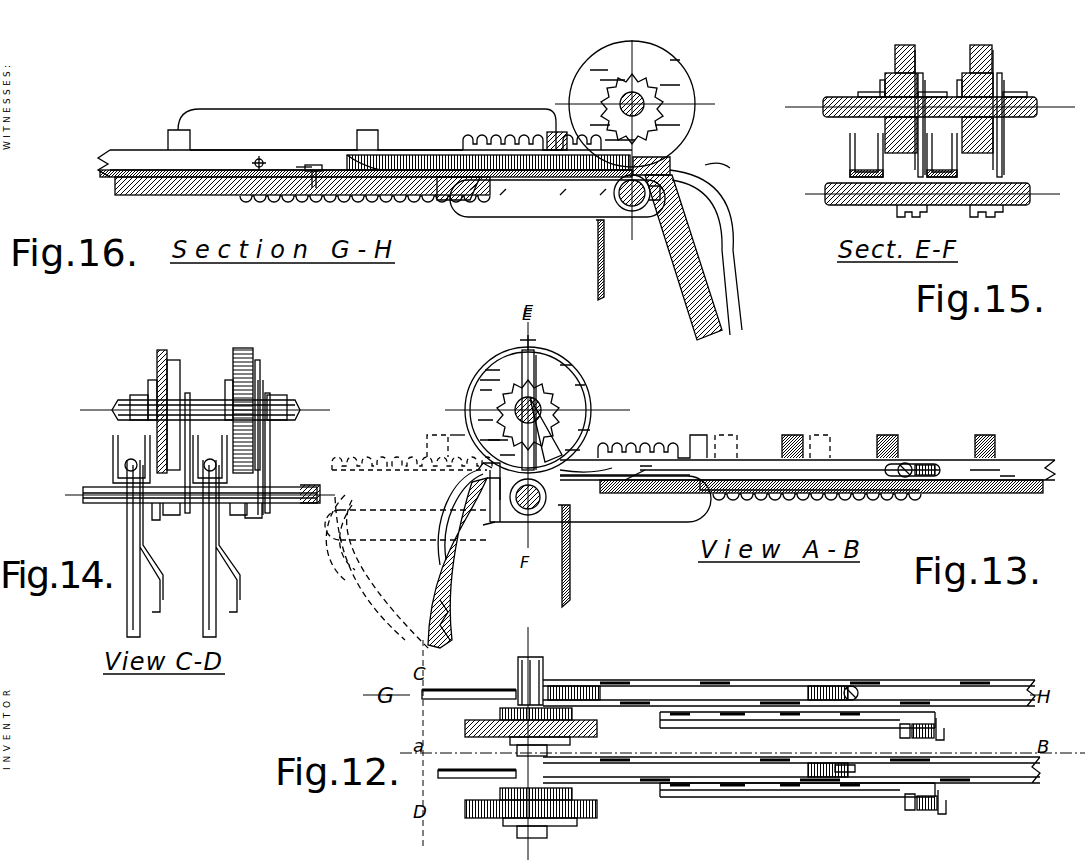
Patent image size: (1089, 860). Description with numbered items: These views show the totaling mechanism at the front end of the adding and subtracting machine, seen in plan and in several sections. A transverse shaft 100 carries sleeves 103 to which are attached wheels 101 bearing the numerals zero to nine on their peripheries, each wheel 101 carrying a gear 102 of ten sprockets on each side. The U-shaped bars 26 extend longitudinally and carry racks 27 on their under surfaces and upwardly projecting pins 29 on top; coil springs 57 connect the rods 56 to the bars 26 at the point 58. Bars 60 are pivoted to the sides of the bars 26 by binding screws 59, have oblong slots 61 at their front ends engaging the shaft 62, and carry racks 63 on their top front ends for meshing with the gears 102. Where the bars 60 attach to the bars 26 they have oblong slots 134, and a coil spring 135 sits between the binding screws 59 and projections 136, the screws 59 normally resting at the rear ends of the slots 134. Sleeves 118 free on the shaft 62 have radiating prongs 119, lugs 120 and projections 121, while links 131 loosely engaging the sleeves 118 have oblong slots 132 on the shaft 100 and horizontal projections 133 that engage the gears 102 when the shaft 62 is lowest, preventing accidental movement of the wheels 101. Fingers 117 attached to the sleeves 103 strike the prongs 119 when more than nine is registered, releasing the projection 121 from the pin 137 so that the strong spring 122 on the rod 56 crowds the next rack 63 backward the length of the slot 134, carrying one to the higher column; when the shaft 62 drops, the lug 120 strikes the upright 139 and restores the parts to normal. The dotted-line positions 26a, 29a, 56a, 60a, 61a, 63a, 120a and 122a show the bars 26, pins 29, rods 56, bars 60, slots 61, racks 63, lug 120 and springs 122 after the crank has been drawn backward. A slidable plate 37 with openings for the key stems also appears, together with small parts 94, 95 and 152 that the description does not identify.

In FIG. 16, the bar 26 is at (112, 156).
In FIG. 15, the bar 26 is at (850, 162).
In FIG. 13, the bar 26 is at (1010, 465).
In FIG. 12, the bar 26 is at (660, 680).
In FIG. 13, the bar in dotted-line position 26a is at (398, 452).
In FIG. 16, the rack 27 is at (172, 196).
In FIG. 13, the rack 27 is at (840, 508).
In FIG. 16, the upwardly projecting pin 29 is at (395, 109).
In FIG. 15, the upwardly projecting pin 29 is at (850, 138).
In FIG. 14, the upwardly projecting pin 29 is at (113, 442).
In FIG. 13, the upwardly projecting pin 29 is at (888, 435).
In FIG. 13, the pin in dotted-line position 29a is at (470, 418).
In FIG. 14, the slidable plate 37 is at (158, 520).
In FIG. 16, the rod 56 is at (692, 261).
In FIG. 14, the rod 56 is at (127, 537).
In FIG. 13, the rod 56 is at (466, 586).
In FIG. 12, the rod 56 is at (465, 692).
In FIG. 13, the rod in dotted-line position 56a is at (400, 612).
In FIG. 16, the coil spring 57 is at (385, 162).
In FIG. 14, the coil spring 57 is at (170, 451).
In FIG. 12, the coil spring 57 is at (550, 686).
In FIG. 16, the spring connection point 58 is at (336, 166).
In FIG. 16, the binding screw 59 is at (258, 157).
In FIG. 13, the binding screw 59 is at (908, 468).
In FIG. 12, the binding screw 59 is at (900, 731).
In FIG. 13, the bar 60 is at (848, 468).
In FIG. 12, the bar 60 is at (760, 722).
In FIG. 13, the bar in dotted-line position 60a is at (650, 473).
In FIG. 16, the oblong slot 61 is at (551, 197).
In FIG. 13, the oblong slot 61 is at (675, 498).
In FIG. 13, the oblong slot in dotted-line position 61a is at (407, 525).
In FIG. 16, the shaft 62 is at (645, 207).
In FIG. 15, the shaft 62 is at (826, 200).
In FIG. 14, the shaft 62 is at (90, 490).
In FIG. 13, the shaft 62 is at (310, 486).
In FIG. 16, the rack 63 is at (472, 134).
In FIG. 13, the rack 63 is at (625, 432).
In FIG. 12, the rack 63 is at (672, 724).
In FIG. 13, the rack in dotted-line position 63a is at (330, 460).
In FIG. 16, the pin 94 is at (318, 188).
In FIG. 12, the pin 94 is at (843, 765).
In FIG. 16, the screw 95 is at (300, 163).
In FIG. 12, the screw 95 is at (850, 688).
In FIG. 15, the shaft 100 is at (822, 96).
In FIG. 14, the shaft 100 is at (114, 404).
In FIG. 13, the shaft 100 is at (485, 360).
In FIG. 12, the shaft 100 is at (530, 648).
In FIG. 16, the wheel 101 is at (665, 65).
In FIG. 15, the wheel 101 is at (895, 52).
In FIG. 14, the wheel 101 is at (160, 350).
In FIG. 13, the wheel 101 is at (545, 350).
In FIG. 12, the wheel 101 is at (465, 724).
In FIG. 16, the gear 102 is at (600, 92).
In FIG. 15, the gear 102 is at (888, 80).
In FIG. 14, the gear 102 is at (152, 380).
In FIG. 13, the gear 102 is at (560, 390).
In FIG. 12, the gear 102 is at (500, 714).
In FIG. 15, the sleeve 103 is at (858, 94).
In FIG. 14, the sleeve 103 is at (137, 395).
In FIG. 13, the sleeve 103 is at (480, 386).
In FIG. 12, the sleeve 103 is at (520, 665).
In FIG. 15, the finger 117 is at (1003, 138).
In FIG. 14, the finger 117 is at (190, 393).
In FIG. 13, the finger 117 is at (575, 405).
In FIG. 12, the finger 117 is at (547, 752).
In FIG. 16, the sleeve 118 is at (616, 197).
In FIG. 15, the sleeve 118 is at (912, 218).
In FIG. 14, the sleeve 118 is at (175, 515).
In FIG. 15, the prong 119 is at (1004, 164).
In FIG. 14, the prong 119 is at (270, 468).
In FIG. 13, the prong 119 is at (590, 448).
In FIG. 16, the lug 120 is at (616, 186).
In FIG. 13, the lug 120 is at (550, 492).
In FIG. 13, the lug in dotted-line position 120a is at (575, 522).
In FIG. 13, the projection 121 is at (488, 525).
In FIG. 16, the spring 122 is at (712, 178).
In FIG. 14, the spring 122 is at (158, 553).
In FIG. 13, the spring 122 is at (440, 556).
In FIG. 13, the spring in dotted-line position 122a is at (340, 574).
In FIG. 14, the link 131 is at (255, 515).
In FIG. 15, the oblong slot 132 is at (922, 90).
In FIG. 13, the oblong slot 132 is at (555, 380).
In FIG. 15, the horizontal projection 133 is at (918, 45).
In FIG. 14, the horizontal projection 133 is at (174, 362).
In FIG. 13, the horizontal projection 133 is at (522, 356).
In FIG. 12, the horizontal projection 133 is at (570, 740).
In FIG. 13, the oblong slot 134 is at (920, 500).
In FIG. 13, the coil spring 135 is at (928, 468).
In FIG. 12, the coil spring 135 is at (920, 738).
In FIG. 13, the projection 136 is at (922, 465).
In FIG. 12, the projection 136 is at (944, 732).
In FIG. 13, the pin 137 is at (480, 483).
In FIG. 16, the upright 139 is at (605, 270).
In FIG. 13, the upright 139 is at (571, 562).
In FIG. 13, the pin 152 is at (455, 498).